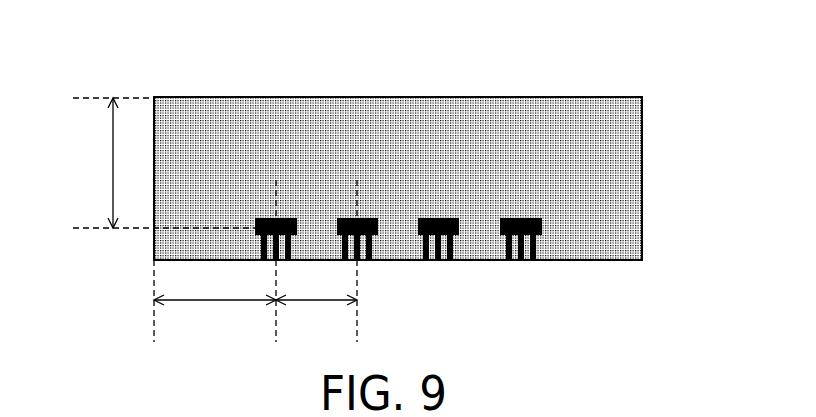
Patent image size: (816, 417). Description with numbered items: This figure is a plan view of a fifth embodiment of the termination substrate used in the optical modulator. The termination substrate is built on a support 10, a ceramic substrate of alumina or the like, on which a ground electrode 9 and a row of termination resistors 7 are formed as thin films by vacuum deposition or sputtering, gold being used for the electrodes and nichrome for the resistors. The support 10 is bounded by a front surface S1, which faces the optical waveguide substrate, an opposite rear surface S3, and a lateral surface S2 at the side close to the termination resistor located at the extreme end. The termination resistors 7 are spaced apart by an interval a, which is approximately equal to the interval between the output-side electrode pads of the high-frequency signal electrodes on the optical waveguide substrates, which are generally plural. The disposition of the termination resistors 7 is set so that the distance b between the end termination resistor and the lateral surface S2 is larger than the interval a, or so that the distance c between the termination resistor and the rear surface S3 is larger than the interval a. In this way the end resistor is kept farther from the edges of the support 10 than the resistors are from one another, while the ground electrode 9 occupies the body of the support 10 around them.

The termination resistor 7 is at (437, 218).
The ground electrode 9 is at (602, 163).
The support 10 is at (583, 262).
The front surface S1 is at (400, 260).
The lateral surface S2 is at (153, 242).
The rear surface S3 is at (319, 97).
The interval between the termination resistors a is at (316, 261).
The distance between end termination resistor and lateral surface b is at (215, 261).
The distance between termination resistor and rear surface c is at (164, 163).